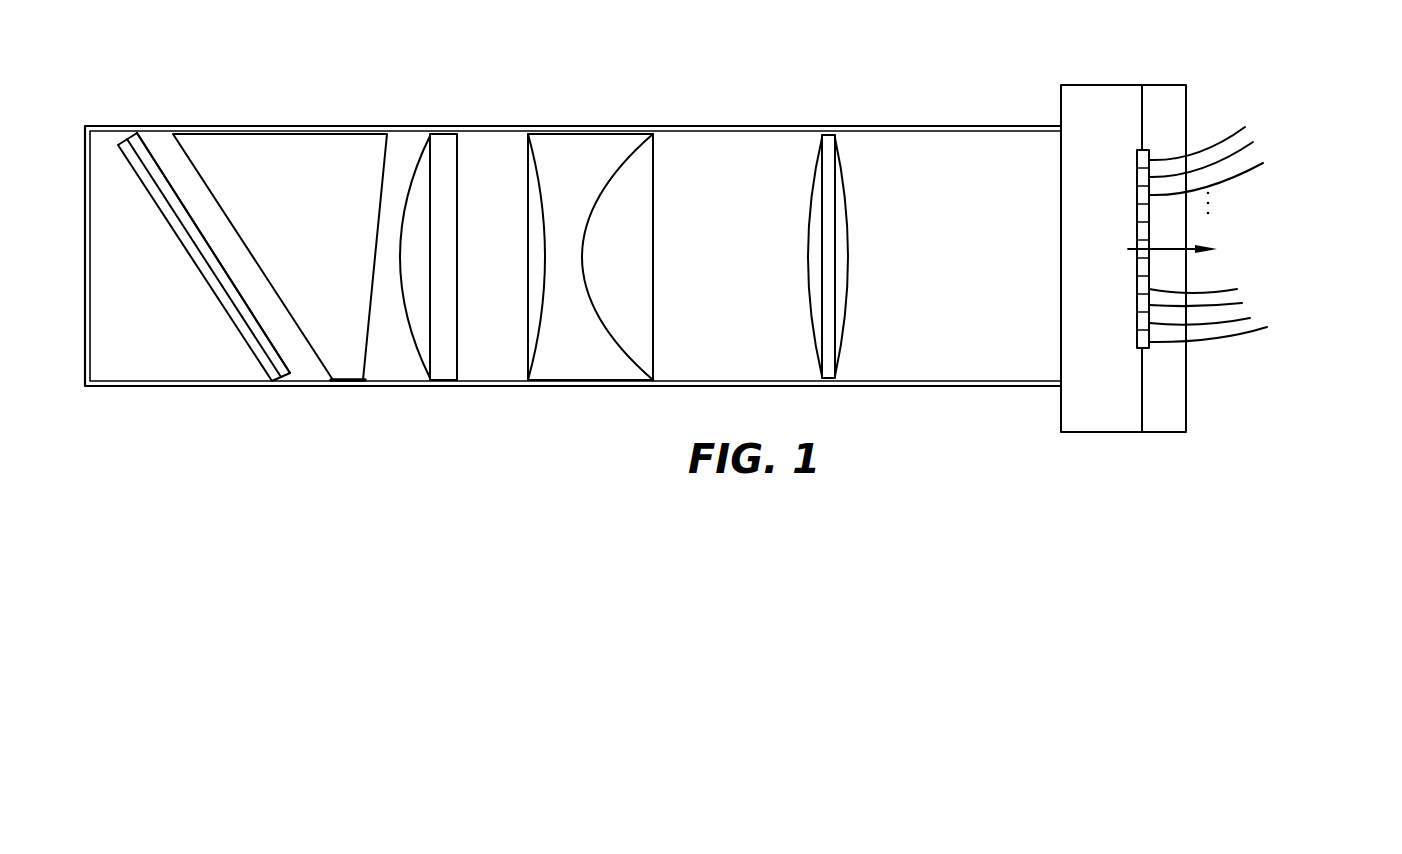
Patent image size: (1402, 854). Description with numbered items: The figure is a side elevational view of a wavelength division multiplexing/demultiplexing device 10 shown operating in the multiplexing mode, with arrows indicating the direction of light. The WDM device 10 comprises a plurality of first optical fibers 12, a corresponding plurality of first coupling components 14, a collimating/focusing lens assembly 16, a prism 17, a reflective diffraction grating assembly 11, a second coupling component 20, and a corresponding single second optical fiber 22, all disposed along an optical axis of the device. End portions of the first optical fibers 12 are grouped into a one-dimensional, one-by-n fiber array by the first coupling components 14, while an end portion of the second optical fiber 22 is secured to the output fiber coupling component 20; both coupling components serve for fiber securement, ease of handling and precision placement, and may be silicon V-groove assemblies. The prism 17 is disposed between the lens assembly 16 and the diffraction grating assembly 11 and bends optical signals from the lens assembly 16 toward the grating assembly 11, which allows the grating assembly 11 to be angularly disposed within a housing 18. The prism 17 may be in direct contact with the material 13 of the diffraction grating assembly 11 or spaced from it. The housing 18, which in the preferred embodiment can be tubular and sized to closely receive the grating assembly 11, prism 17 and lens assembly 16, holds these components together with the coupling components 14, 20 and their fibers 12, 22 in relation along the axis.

The wavelength division multiplexing/demultiplexing device 10 is at (190, 76).
The reflective diffraction grating assembly 11 is at (185, 250).
The first optical fibers 12 is at (1242, 148).
The material of diffraction grating assembly 13 is at (273, 334).
The first coupling components 14 is at (1142, 148).
The collimating/focusing lens assembly 16 is at (853, 107).
The prism 17 is at (303, 143).
The housing 18 is at (975, 130).
The second coupling component 20 is at (1130, 250).
The second optical fiber 22 is at (1175, 249).